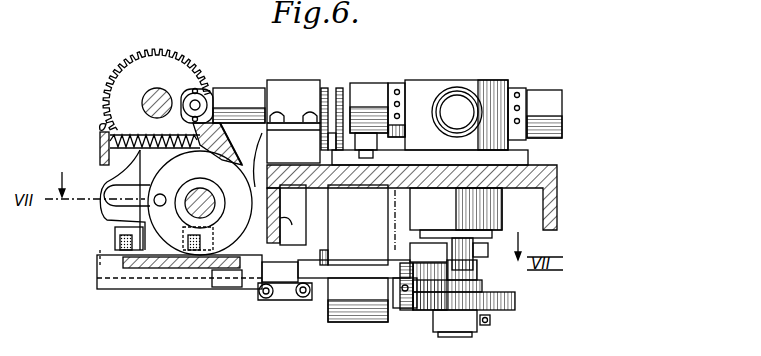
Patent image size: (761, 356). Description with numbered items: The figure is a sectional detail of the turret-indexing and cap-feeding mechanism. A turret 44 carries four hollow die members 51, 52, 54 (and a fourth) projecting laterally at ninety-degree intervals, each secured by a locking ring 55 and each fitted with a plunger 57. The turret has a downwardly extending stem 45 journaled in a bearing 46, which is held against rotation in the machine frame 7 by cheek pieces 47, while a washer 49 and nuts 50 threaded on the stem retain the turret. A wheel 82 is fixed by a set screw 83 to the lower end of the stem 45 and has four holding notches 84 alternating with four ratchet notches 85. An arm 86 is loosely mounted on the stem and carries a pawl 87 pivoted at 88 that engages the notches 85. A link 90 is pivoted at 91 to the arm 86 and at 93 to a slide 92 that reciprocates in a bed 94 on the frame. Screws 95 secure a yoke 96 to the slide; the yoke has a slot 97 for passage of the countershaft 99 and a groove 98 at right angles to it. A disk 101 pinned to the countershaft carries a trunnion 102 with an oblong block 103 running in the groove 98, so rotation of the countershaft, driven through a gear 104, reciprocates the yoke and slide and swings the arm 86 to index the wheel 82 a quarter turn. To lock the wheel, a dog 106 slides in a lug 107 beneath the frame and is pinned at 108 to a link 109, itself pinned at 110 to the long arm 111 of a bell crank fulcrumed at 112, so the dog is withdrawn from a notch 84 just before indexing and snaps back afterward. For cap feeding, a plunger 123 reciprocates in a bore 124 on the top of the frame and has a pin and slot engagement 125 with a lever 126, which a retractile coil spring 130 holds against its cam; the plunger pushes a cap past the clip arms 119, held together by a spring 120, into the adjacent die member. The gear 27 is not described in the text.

The gear 27 is at (150, 99).
The gear 104 is at (118, 95).
The retractile coil spring 130 is at (100, 128).
The groove 98 is at (152, 135).
The pin and slot engagement 125 is at (198, 102).
The lever 126 is at (226, 152).
The plunger 123 is at (239, 105).
The bore 124 is at (293, 121).
The arms 119 is at (339, 88).
The die member 52 is at (369, 108).
The retractile coil spring 120 is at (374, 145).
The locking ring 55 is at (432, 102).
The turret 44 is at (440, 88).
The plunger 57 is at (457, 112).
The die member 51 is at (436, 112).
The die member 54 is at (535, 114).
The cheek pieces 47 is at (430, 158).
The machine frame 7 is at (550, 193).
The bearing 46 is at (456, 229).
The fulcrum 112 is at (287, 215).
The long arm 111 is at (294, 226).
The lug 107 is at (357, 225).
The pivot 93 is at (322, 250).
The pivot 91 is at (424, 258).
The slide 92 is at (280, 271).
The link 90 is at (358, 268).
The pin 110 is at (267, 300).
The link 109 is at (286, 300).
The pin 108 is at (306, 298).
The dog 106 is at (397, 308).
The pivot 88 is at (419, 308).
The pawl 87 is at (425, 307).
The nuts 50 is at (480, 251).
The washer 49 is at (505, 233).
The stem 45 is at (463, 269).
The arm 86 is at (480, 283).
The notches 85 is at (507, 293).
The wheel 82 is at (512, 302).
The set screw 83 is at (490, 322).
The notches 84 is at (462, 329).
The slot 97 is at (112, 188).
The trunnion 102 is at (108, 205).
The yoke 96 is at (110, 213).
The screws 95 is at (115, 246).
The countershaft 99 is at (214, 210).
The bed 94 is at (161, 290).
The oblong block 103 is at (150, 270).
The disk 101 is at (221, 290).